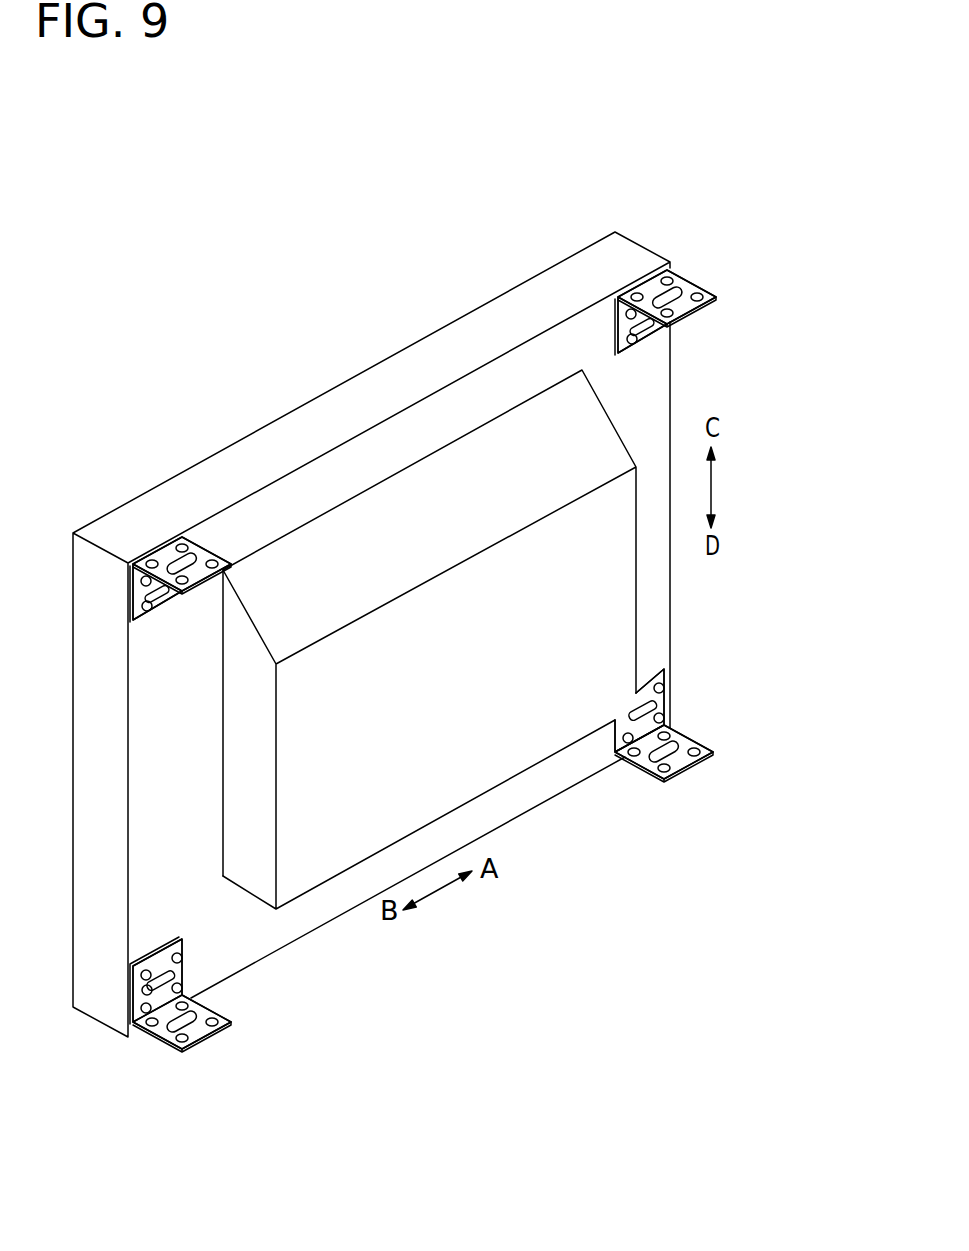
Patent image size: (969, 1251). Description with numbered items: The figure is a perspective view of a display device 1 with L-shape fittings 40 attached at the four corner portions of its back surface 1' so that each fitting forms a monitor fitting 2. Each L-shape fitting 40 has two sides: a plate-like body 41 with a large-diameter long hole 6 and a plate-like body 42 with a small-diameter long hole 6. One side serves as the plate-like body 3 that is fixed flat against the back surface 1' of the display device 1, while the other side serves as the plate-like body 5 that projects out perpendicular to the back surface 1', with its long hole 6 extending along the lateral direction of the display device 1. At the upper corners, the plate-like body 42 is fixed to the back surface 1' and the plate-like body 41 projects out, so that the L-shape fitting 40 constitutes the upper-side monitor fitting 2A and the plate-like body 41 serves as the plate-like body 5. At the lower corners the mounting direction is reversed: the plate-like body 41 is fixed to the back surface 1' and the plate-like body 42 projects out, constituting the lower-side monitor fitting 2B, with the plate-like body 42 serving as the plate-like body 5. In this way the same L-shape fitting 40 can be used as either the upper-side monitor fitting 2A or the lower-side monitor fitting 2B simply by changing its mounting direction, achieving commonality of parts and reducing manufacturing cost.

The display device 1 is at (371, 634).
The back surface 1' is at (429, 600).
The monitor fitting 2 is at (444, 684).
The upper-side monitor fitting 2A is at (852, 276).
The lower-side monitor fitting 2B is at (810, 634).
The plate-like body 3 is at (650, 328).
The plate-like body 5 is at (446, 630).
The plate-like body 41 is at (665, 273).
The plate-like body 42 is at (642, 757).
The long hole 6 is at (627, 333).
The L-shape fitting 40 is at (706, 292).